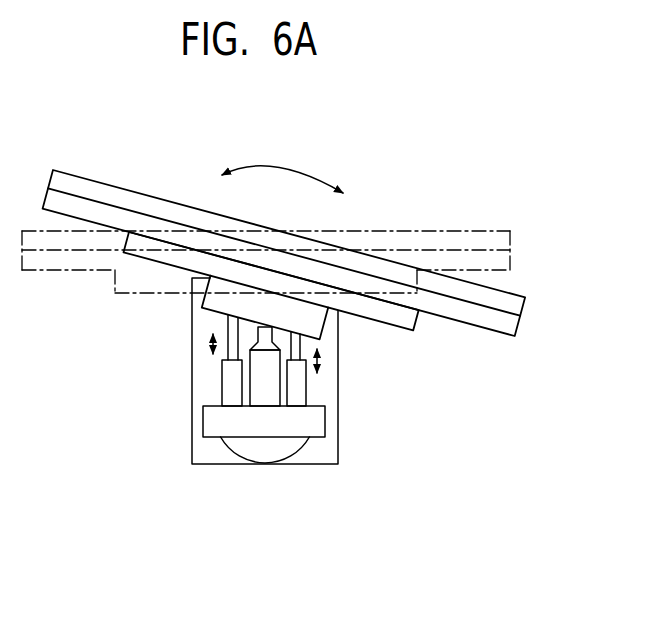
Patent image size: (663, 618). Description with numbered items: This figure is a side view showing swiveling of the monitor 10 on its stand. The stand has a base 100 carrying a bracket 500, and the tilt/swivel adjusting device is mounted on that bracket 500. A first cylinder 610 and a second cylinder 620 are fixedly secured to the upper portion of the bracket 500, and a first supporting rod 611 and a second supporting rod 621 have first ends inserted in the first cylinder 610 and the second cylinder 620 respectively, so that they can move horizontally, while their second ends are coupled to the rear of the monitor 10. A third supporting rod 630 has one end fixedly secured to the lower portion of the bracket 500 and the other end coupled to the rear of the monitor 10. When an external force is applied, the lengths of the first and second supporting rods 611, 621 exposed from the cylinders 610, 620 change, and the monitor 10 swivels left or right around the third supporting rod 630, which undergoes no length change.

The monitor 10 is at (487, 322).
The base 100 is at (340, 441).
The bracket 500 is at (262, 432).
The first cylinder 610 is at (308, 387).
The first supporting rod 611 is at (305, 338).
The second cylinder 620 is at (222, 387).
The second supporting rod 621 is at (227, 317).
The third supporting rod 630 is at (273, 407).